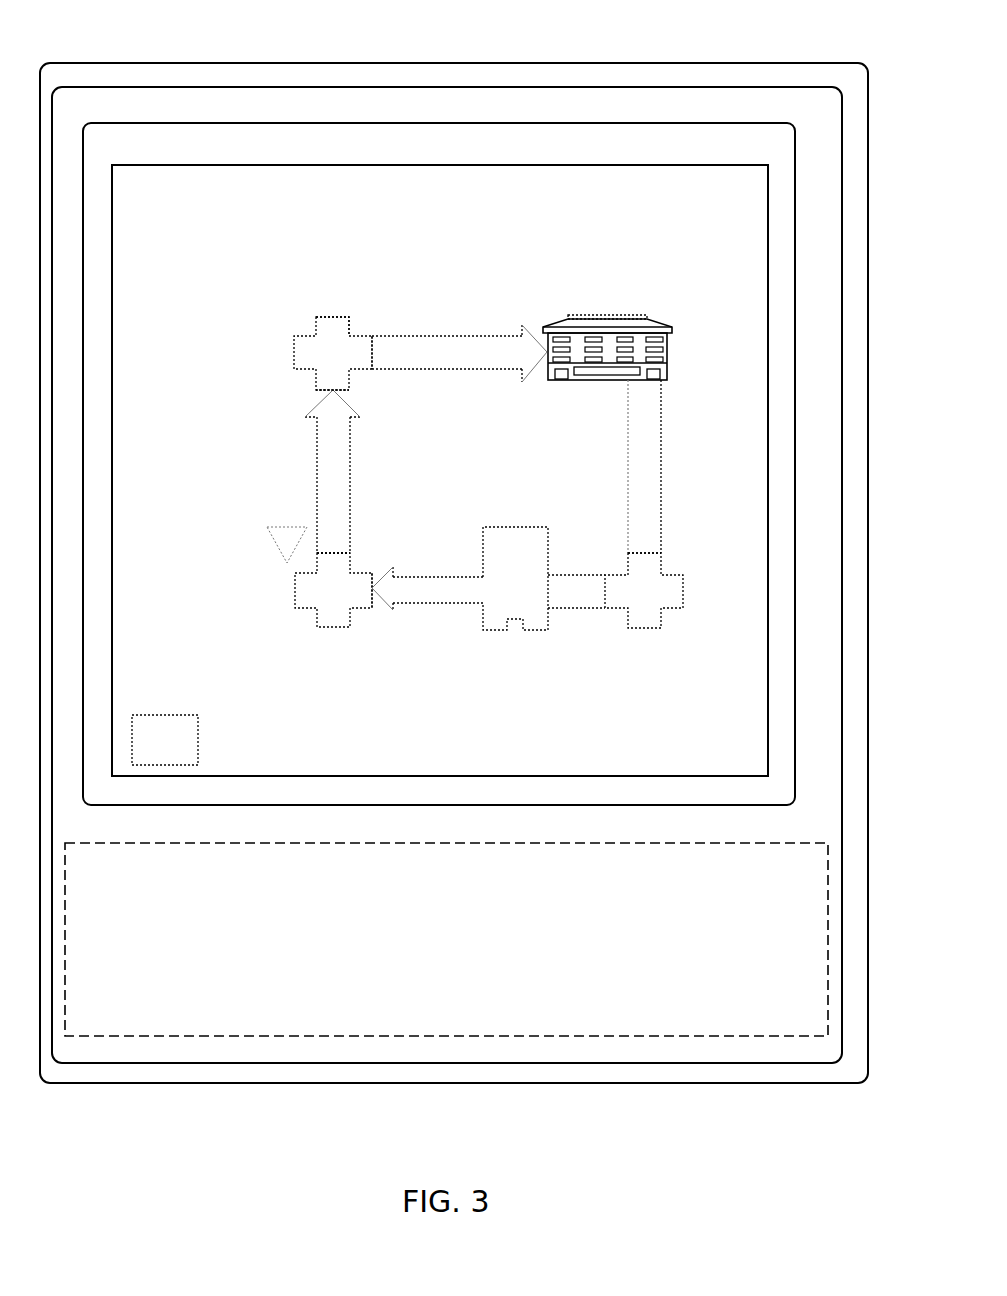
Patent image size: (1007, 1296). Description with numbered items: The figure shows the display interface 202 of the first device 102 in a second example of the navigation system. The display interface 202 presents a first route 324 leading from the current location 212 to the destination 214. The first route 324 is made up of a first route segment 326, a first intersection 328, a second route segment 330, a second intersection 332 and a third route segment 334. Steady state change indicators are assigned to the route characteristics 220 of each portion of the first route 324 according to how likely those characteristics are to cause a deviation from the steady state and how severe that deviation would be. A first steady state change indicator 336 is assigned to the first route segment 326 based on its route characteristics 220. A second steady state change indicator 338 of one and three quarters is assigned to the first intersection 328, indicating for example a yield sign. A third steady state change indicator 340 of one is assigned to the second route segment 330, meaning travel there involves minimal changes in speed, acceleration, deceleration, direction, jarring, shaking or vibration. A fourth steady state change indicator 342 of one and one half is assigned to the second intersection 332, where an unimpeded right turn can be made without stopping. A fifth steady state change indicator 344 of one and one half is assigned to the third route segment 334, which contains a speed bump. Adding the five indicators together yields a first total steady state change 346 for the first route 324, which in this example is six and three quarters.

The first device 102 is at (225, 88).
The display interface 202 is at (753, 243).
The current location 212 is at (515, 622).
The destination 214 is at (628, 313).
The route characteristics 220 is at (267, 525).
The first route 324 is at (343, 565).
The first route segment 326 is at (423, 603).
The first intersection 328 is at (290, 652).
The second route segment 330 is at (246, 471).
The second intersection 332 is at (330, 315).
The third route segment 334 is at (480, 335).
The first steady state change indicator 336 is at (436, 667).
The second steady state change indicator 338 is at (325, 575).
The third steady state change indicator 340 is at (320, 497).
The fourth steady state change indicator 342 is at (342, 285).
The fifth steady state change indicator 344 is at (460, 284).
The first total steady state change 346 is at (165, 740).